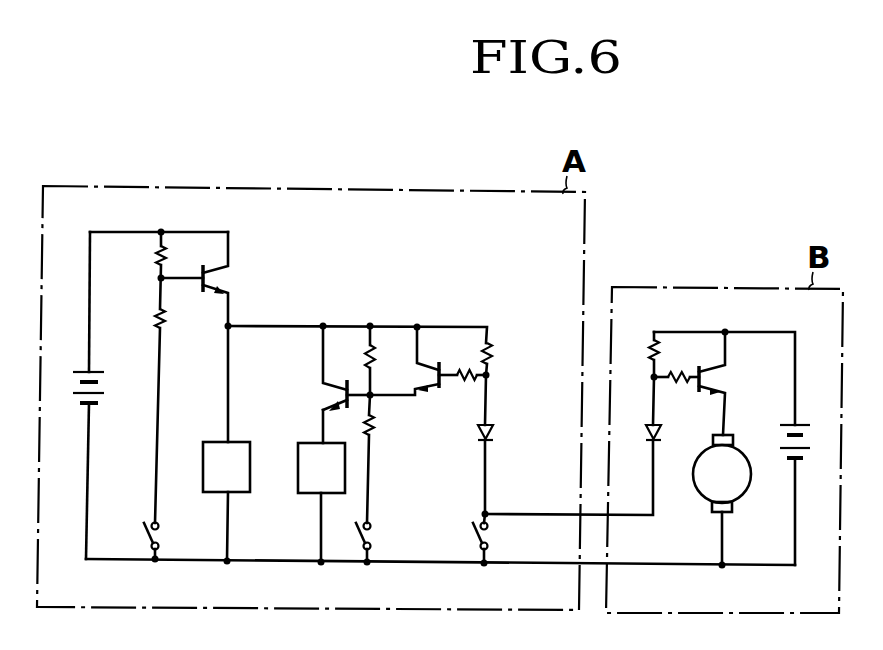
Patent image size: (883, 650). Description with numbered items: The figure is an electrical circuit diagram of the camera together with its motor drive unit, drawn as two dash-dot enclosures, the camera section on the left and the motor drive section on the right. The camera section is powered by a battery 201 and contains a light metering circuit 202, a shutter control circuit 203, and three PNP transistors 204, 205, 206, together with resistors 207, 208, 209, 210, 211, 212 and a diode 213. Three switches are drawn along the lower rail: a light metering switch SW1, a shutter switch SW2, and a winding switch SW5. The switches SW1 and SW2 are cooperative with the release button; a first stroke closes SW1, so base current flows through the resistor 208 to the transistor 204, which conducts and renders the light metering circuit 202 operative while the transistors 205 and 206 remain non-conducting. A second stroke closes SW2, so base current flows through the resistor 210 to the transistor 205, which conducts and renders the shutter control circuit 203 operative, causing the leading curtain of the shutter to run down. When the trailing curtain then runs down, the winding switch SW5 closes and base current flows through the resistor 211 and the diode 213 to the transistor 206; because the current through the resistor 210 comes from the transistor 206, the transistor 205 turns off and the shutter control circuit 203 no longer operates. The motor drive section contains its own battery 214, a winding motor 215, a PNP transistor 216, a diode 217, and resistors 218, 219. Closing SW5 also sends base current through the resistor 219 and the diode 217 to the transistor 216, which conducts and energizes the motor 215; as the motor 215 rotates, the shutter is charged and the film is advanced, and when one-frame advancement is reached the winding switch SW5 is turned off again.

The battery 201 is at (113, 374).
The light metering circuit 202 is at (240, 492).
The shutter control circuit 203 is at (305, 443).
The PNP transistor 204 is at (206, 280).
The PNP transistor 205 is at (326, 400).
The PNP transistor 206 is at (420, 364).
The resistor 207 is at (152, 263).
The resistor 208 is at (166, 322).
The resistor 209 is at (387, 361).
The resistor 210 is at (376, 427).
The resistor 211 is at (466, 381).
The resistor 212 is at (493, 356).
The diode 213 is at (493, 430).
The battery 214 is at (809, 437).
The winding motor 215 is at (737, 455).
The PNP transistor 216 is at (712, 380).
The diode 217 is at (659, 431).
The resistor 218 is at (647, 351).
The resistor 219 is at (678, 398).
The light metering switch SW1 is at (160, 530).
The shutter switch SW2 is at (372, 531).
The winding switch SW5 is at (490, 534).